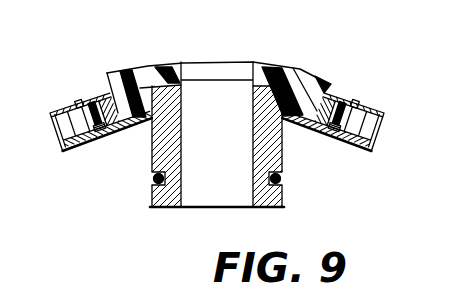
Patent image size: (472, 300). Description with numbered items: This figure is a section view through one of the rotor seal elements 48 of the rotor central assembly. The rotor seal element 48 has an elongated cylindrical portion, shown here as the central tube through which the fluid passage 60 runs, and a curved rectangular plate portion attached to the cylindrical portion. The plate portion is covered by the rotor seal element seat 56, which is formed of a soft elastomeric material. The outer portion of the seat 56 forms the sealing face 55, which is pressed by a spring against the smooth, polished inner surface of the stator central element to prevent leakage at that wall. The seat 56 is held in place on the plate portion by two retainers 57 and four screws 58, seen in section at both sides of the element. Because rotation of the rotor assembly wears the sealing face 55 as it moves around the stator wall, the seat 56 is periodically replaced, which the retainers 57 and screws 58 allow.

The rotor seal element 48 is at (285, 58).
The sealing face 55 is at (153, 66).
The rotor seal element seat 56 is at (372, 142).
The retainer 57 is at (58, 111).
The screw 58 is at (68, 102).
The fluid passage 60 is at (196, 185).